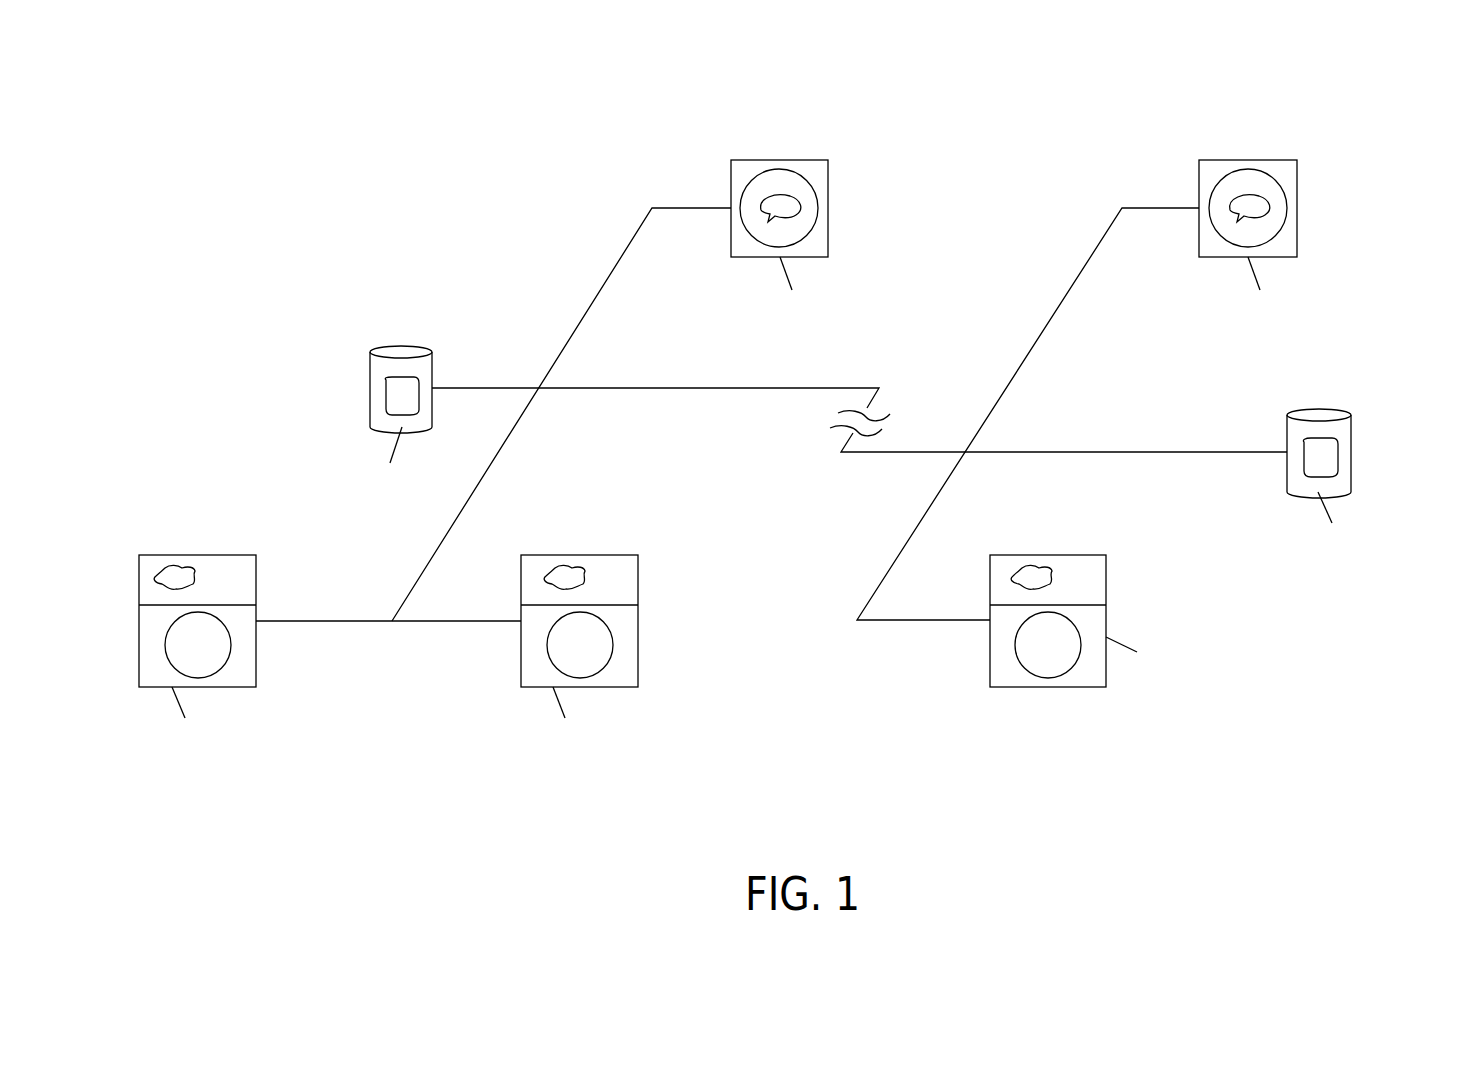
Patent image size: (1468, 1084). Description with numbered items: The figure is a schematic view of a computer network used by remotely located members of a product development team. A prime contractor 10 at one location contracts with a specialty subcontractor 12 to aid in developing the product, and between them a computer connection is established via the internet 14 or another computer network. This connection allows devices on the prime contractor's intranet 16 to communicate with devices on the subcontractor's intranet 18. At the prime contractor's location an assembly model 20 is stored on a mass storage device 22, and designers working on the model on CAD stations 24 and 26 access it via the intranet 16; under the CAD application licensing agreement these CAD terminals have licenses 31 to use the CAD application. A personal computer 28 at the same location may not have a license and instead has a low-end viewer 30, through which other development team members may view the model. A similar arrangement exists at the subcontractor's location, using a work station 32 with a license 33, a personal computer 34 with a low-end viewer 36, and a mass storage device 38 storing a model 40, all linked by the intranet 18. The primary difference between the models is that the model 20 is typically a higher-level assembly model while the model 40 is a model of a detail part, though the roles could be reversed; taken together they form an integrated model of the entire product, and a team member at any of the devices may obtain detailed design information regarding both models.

The prime contractor 10 is at (415, 683).
The specialty subcontractor 12 is at (1115, 702).
The internet 14 is at (882, 470).
The prime contractor's intranet 16 is at (625, 243).
The subcontractor's intranet 18 is at (1045, 358).
The assembly model 20 is at (382, 380).
The mass storage device 22 is at (417, 342).
The CAD station 24 is at (242, 695).
The CAD station 26 is at (623, 695).
The personal computer 28 is at (800, 157).
The low-end viewer 30 is at (800, 207).
The license 31 is at (163, 563).
The work station 32 is at (1067, 703).
The license 33 is at (1024, 563).
The personal computer 34 is at (1268, 157).
The low-end viewer 36 is at (1228, 207).
The mass storage device 38 is at (1340, 407).
The model 40 is at (1343, 455).